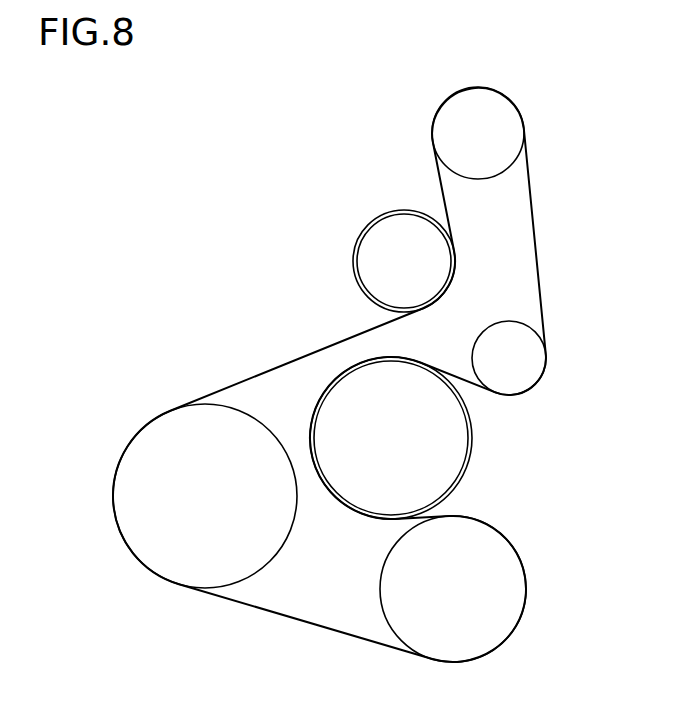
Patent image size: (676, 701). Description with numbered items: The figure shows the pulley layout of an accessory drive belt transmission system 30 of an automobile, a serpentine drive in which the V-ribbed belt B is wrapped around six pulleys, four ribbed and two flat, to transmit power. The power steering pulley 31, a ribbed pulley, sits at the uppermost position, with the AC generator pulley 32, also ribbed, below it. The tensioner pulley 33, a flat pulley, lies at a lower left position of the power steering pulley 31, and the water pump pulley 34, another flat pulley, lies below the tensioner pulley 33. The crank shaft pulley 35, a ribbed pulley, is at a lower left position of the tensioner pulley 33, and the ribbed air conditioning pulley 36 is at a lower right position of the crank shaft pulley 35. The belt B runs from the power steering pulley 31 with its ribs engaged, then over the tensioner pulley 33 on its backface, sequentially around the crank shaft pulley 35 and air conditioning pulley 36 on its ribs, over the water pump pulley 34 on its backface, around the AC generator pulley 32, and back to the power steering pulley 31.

The accessory drive belt transmission system 30 is at (282, 108).
The power steering pulley 31 is at (507, 110).
The AC generator pulley 32 is at (525, 370).
The tensioner pulley 33 is at (385, 230).
The water pump pulley 34 is at (455, 442).
The crank shaft pulley 35 is at (160, 563).
The air conditioning pulley 36 is at (510, 587).
The V-ribbed belt B is at (307, 355).